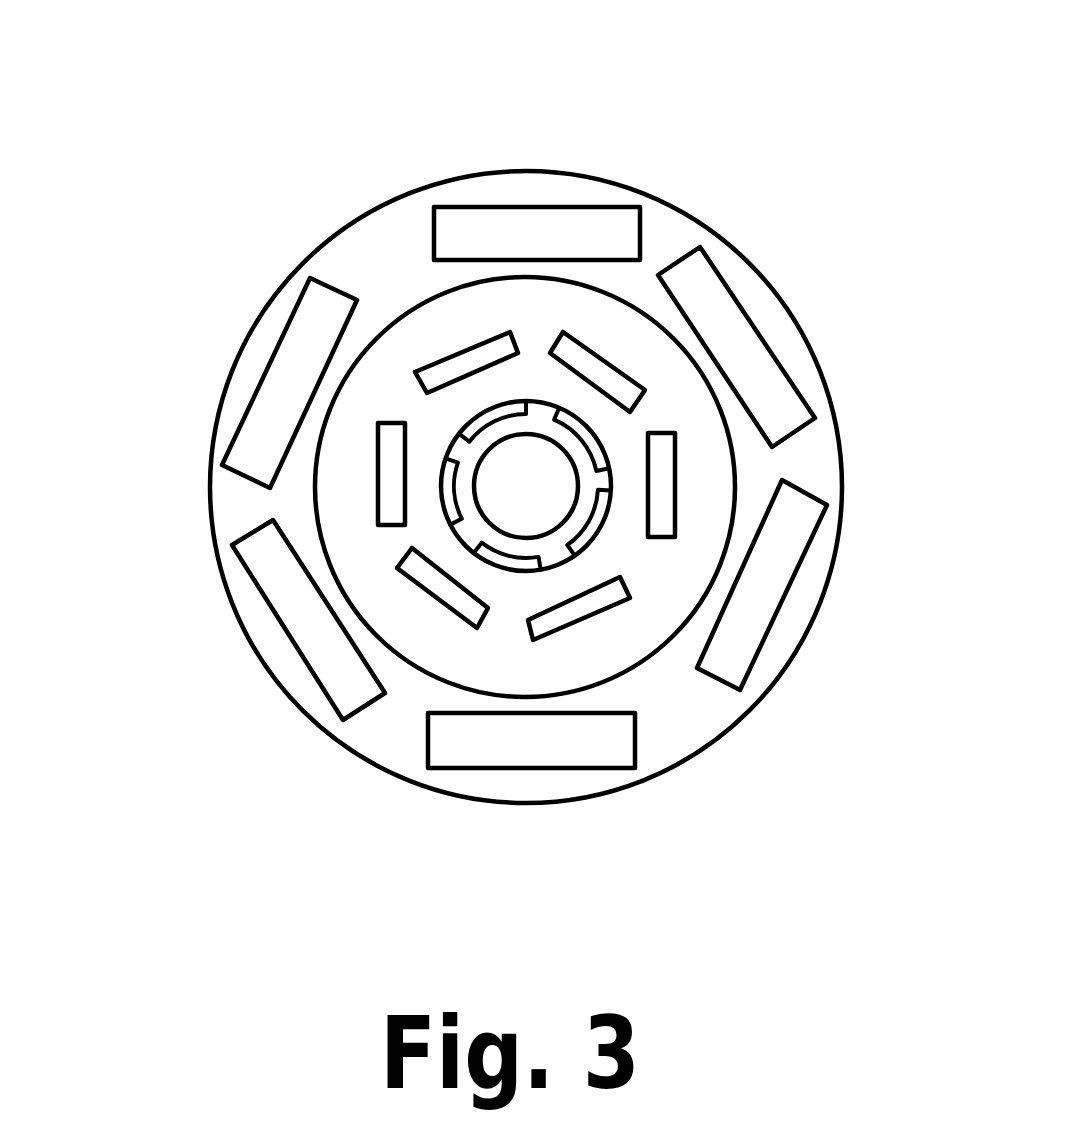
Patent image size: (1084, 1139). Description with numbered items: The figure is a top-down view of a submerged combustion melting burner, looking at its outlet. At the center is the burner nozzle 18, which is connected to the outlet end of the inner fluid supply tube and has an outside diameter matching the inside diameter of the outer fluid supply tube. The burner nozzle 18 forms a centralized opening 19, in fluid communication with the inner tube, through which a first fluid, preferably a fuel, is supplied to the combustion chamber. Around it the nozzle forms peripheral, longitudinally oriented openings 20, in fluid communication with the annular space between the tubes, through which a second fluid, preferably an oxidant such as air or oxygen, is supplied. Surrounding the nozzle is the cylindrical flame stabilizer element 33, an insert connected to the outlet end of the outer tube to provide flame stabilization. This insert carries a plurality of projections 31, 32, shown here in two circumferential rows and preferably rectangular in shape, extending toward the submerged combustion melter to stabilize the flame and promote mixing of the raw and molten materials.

The burner nozzle 18 is at (458, 448).
The centralized opening 19 is at (550, 483).
The peripheral, longitudinally oriented opening 20 is at (600, 505).
The projection 31 is at (597, 207).
The projection 32 is at (445, 608).
The cylindrical flame stabilizer element 33 is at (396, 200).